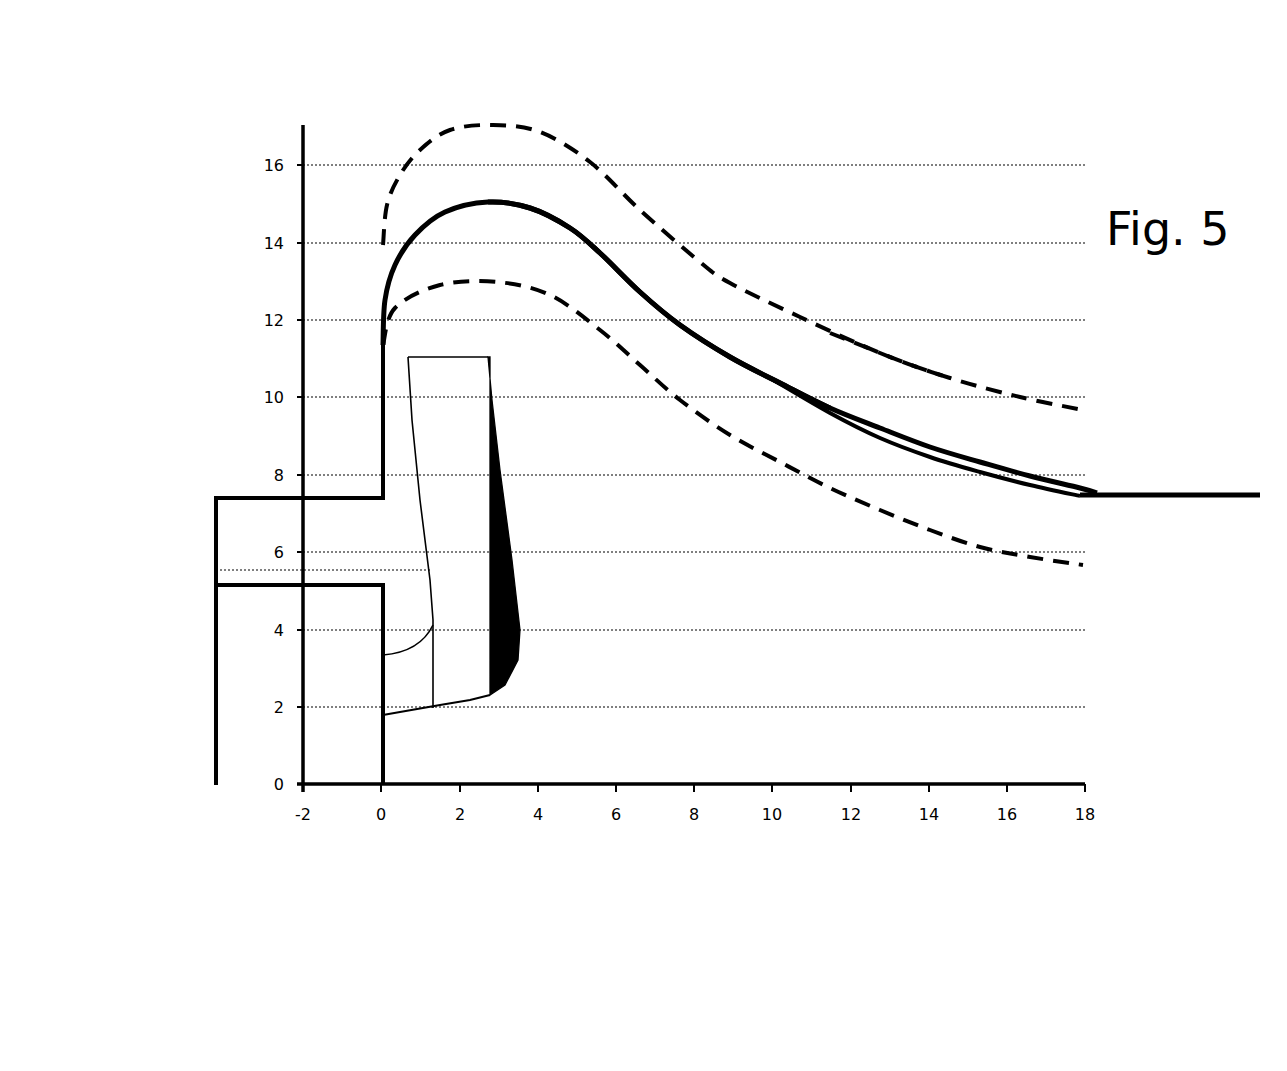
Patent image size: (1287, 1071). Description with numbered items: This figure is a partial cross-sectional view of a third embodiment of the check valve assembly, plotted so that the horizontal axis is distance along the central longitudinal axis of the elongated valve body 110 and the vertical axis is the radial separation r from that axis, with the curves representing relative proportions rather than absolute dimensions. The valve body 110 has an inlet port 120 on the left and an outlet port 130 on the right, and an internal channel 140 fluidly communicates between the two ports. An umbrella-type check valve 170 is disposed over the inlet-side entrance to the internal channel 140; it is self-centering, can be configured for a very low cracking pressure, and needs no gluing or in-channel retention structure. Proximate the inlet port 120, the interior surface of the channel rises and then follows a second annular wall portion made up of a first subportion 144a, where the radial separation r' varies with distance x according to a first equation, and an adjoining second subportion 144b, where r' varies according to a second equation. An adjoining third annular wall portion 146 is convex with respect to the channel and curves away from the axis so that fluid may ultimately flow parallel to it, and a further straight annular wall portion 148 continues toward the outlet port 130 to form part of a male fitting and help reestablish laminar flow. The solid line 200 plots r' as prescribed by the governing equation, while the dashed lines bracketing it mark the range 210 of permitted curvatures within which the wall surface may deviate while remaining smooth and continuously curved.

The valve body 110 is at (375, 345).
The inlet port 120 is at (355, 542).
The outlet port 130 is at (1232, 613).
The internal channel 140 is at (724, 614).
The first subportion 144a is at (430, 218).
The second subportion 144b is at (555, 222).
The third annular wall portion 146 is at (770, 380).
The straight annular wall portion 148 is at (1152, 492).
The umbrella-type check valve 170 is at (216, 572).
The line representing r' of equation 200 is at (990, 463).
The permitted range 210 is at (910, 388).